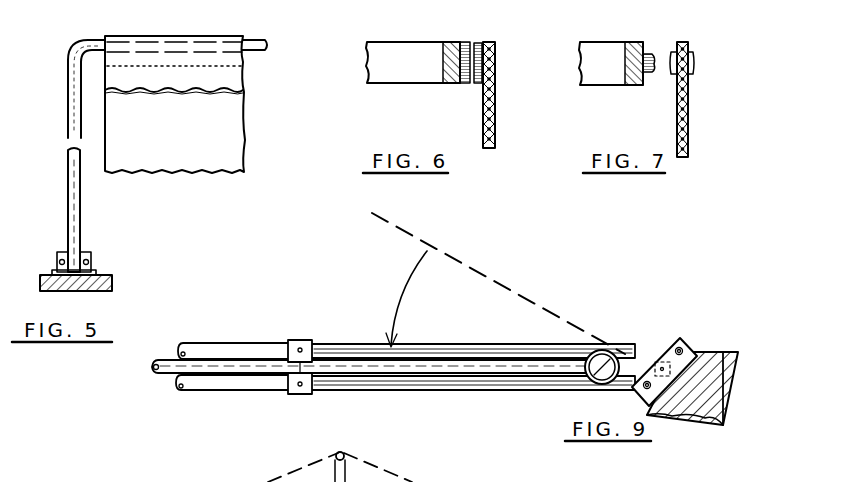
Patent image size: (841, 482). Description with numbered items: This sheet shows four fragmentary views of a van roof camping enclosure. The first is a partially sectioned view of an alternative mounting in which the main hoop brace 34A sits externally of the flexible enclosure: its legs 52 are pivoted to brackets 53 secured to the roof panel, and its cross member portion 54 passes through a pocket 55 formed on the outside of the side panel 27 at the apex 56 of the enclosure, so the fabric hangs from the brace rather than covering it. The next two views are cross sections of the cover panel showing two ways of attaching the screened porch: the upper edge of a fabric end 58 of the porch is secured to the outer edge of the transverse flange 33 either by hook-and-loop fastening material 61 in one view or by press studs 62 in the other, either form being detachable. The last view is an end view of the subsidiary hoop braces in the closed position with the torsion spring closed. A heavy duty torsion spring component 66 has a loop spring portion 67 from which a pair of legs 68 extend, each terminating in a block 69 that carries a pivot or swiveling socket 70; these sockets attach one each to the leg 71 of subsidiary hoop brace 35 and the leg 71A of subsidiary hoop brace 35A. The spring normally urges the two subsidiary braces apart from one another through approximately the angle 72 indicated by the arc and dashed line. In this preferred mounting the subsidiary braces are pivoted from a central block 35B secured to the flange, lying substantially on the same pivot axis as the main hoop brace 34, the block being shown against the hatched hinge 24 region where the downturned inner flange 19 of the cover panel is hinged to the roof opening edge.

In FIG. 9, the inner flange 19 is at (734, 395).
In FIG. 9, the hinge 24 is at (718, 360).
In FIG. 5, the side panel 27 is at (192, 89).
In FIG. 6, the transverse flange 33 is at (443, 60).
In FIG. 7, the transverse flange 33 is at (622, 56).
In FIG. 9, the main hoop brace 34 is at (152, 370).
In FIG. 5, the main hoop brace 34A is at (88, 216).
In FIG. 9, the subsidiary hoop brace 35 is at (198, 404).
In FIG. 9, the subsidiary hoop brace 35A is at (211, 338).
In FIG. 9, the central block 35B is at (676, 340).
In FIG. 5, the leg 52 is at (70, 192).
In FIG. 5, the bracket 53 is at (88, 264).
In FIG. 5, the cross member portion 54 is at (80, 40).
In FIG. 5, the pocket 55 is at (175, 36).
In FIG. 5, the apex 56 is at (217, 68).
In FIG. 6, the end 58 is at (495, 122).
In FIG. 7, the end 58 is at (677, 112).
In FIG. 6, the fastening material 61 is at (470, 42).
In FIG. 7, the press stud 62 is at (650, 54).
In FIG. 9, the torsion spring component 66 is at (342, 357).
In FIG. 9, the loop spring portion 67 is at (610, 356).
In FIG. 9, the leg 68 is at (480, 351).
In FIG. 9, the block 69 is at (308, 345).
In FIG. 9, the swiveling socket 70 is at (297, 346).
In FIG. 9, the leg 71 is at (236, 382).
In FIG. 9, the leg 71A is at (220, 348).
In FIG. 9, the angle 72 is at (401, 328).